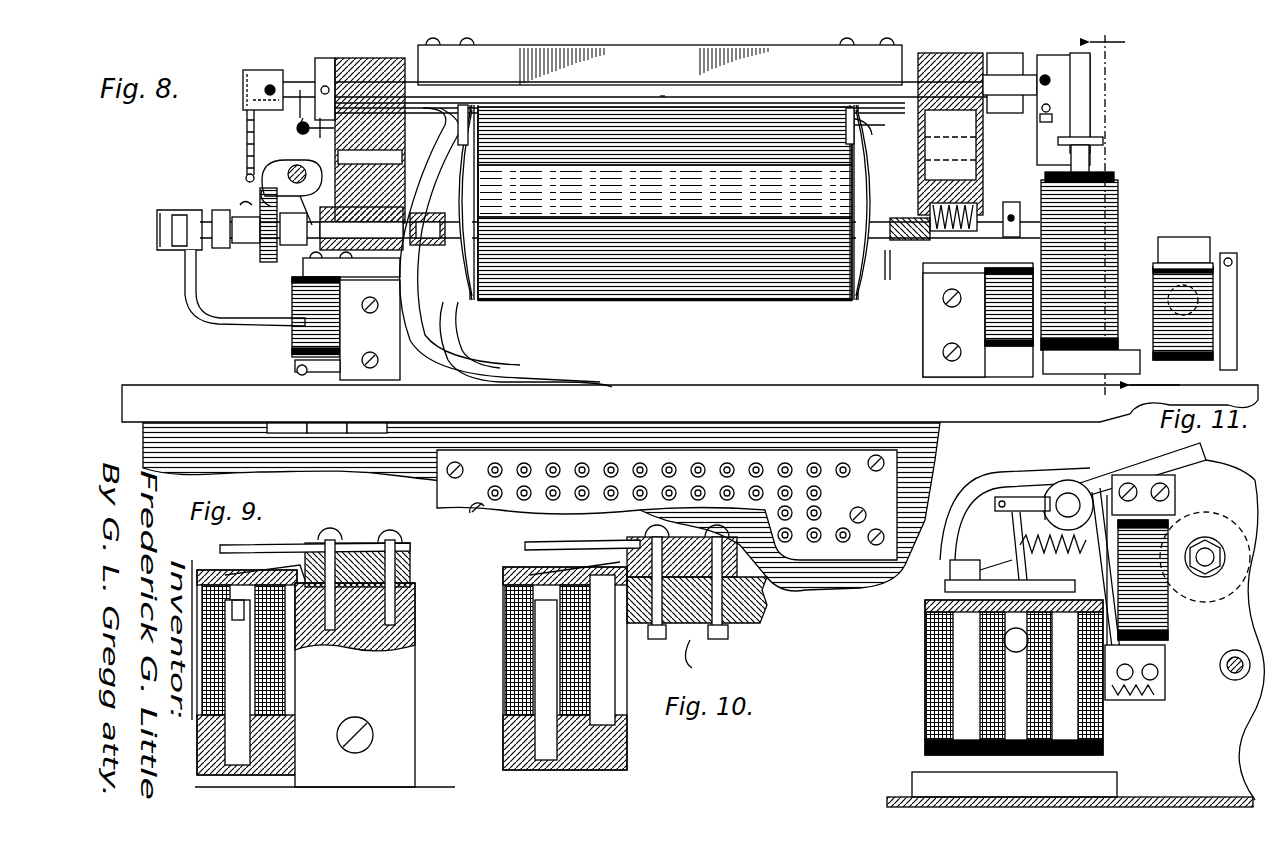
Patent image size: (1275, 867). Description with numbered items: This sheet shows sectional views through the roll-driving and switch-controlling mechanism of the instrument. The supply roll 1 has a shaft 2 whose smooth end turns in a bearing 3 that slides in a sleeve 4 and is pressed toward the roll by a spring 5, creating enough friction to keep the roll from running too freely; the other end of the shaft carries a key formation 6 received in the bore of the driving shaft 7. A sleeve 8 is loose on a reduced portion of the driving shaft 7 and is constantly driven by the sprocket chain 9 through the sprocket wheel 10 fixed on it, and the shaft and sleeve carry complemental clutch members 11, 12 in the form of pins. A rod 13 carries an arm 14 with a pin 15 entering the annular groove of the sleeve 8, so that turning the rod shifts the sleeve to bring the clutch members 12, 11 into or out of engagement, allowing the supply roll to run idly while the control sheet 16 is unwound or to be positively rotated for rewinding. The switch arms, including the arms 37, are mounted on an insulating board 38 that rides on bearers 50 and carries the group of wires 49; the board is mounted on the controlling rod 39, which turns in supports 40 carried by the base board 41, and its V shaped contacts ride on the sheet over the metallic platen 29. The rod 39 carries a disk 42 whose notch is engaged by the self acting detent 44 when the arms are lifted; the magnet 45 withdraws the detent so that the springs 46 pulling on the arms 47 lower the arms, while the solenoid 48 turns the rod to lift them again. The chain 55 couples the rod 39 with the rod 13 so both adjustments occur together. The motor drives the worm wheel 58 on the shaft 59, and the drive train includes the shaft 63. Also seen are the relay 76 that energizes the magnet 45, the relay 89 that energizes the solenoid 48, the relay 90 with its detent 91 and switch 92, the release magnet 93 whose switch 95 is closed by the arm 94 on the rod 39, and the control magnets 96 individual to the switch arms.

In FIG. 8, the supply roll 1 is at (470, 302).
In FIG. 8, the shaft 2 is at (888, 240).
In FIG. 8, the bearing 3 is at (930, 212).
In FIG. 8, the sleeve 4 is at (904, 252).
In FIG. 8, the spring 5 is at (988, 200).
In FIG. 8, the key formation 6 is at (442, 220).
In FIG. 8, the driving shaft 7 is at (464, 320).
In FIG. 8, the sleeve 8 is at (290, 282).
In FIG. 8, the sprocket chain 9 is at (255, 200).
In FIG. 8, the sprocket wheel 10 is at (245, 255).
In FIG. 8, the clutch member 11 is at (709, 215).
In FIG. 8, the clutch member 12 is at (232, 246).
In FIG. 8, the rod 13 is at (297, 168).
In FIG. 8, the arm 14 is at (268, 182).
In FIG. 8, the pin 15 is at (305, 278).
In FIG. 8, the control sheet 16 is at (651, 282).
In FIG. 8, the platen 29 is at (482, 158).
In FIG. 11, the platen 29 is at (1202, 614).
In FIG. 8, the switch arms 37 is at (760, 494).
In FIG. 11, the switch arms 37 is at (1205, 478).
In FIG. 8, the insulating board 38 is at (660, 61).
In FIG. 11, the insulating board 38 is at (1166, 458).
In FIG. 11, the controlling rod 39 is at (1076, 490).
In FIG. 8, the supports 40 is at (385, 52).
In FIG. 11, the supports 40 is at (985, 500).
In FIG. 8, the base board 41 is at (782, 396).
In FIG. 11, the base board 41 is at (1200, 802).
In FIG. 8, the disk 42 is at (1012, 62).
In FIG. 11, the disk 42 is at (1050, 480).
In FIG. 8, the detent 44 is at (1025, 170).
In FIG. 11, the detent 44 is at (1112, 702).
In FIG. 11, the magnet 45 is at (1182, 520).
In FIG. 8, the springs 46 is at (306, 134).
In FIG. 11, the springs 46 is at (1056, 556).
In FIG. 8, the arms 47 is at (298, 118).
In FIG. 8, the solenoid 48 is at (1116, 216).
In FIG. 11, the solenoid 48 is at (927, 680).
In FIG. 8, the wires 49 is at (663, 108).
In FIG. 8, the bearers 50 is at (468, 140).
In FIG. 8, the chain 55 is at (247, 135).
In FIG. 8, the worm wheel 58 is at (262, 72).
In FIG. 8, the shaft 59 is at (906, 84).
In FIG. 11, the shaft 63 is at (1233, 676).
In FIG. 8, the relay 76 is at (1000, 318).
In FIG. 8, the relay 89 is at (300, 328).
In FIG. 9, the relay 89 is at (268, 674).
In FIG. 8, the relay 90 is at (1166, 312).
In FIG. 8, the detent 91 is at (1178, 238).
In FIG. 8, the switch 92 is at (1234, 260).
In FIG. 8, the release magnet 93 is at (1166, 284).
In FIG. 8, the arm 94 is at (1060, 124).
In FIG. 11, the arm 94 is at (1060, 500).
In FIG. 8, the switch 95 is at (1095, 145).
In FIG. 11, the switch 95 is at (955, 583).
In FIG. 10, the control magnets 96 is at (506, 670).